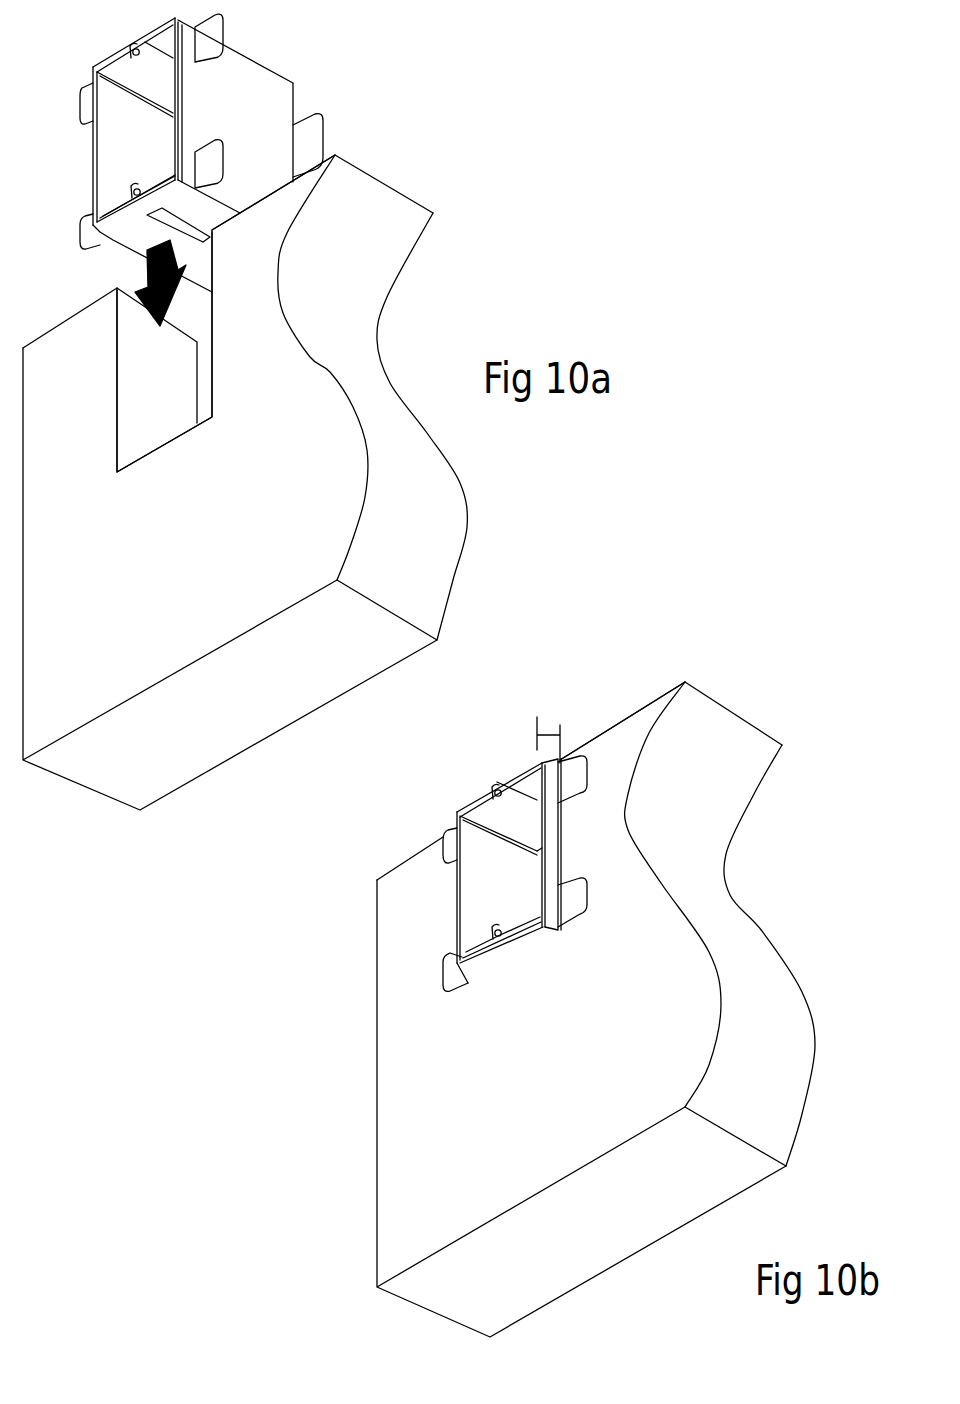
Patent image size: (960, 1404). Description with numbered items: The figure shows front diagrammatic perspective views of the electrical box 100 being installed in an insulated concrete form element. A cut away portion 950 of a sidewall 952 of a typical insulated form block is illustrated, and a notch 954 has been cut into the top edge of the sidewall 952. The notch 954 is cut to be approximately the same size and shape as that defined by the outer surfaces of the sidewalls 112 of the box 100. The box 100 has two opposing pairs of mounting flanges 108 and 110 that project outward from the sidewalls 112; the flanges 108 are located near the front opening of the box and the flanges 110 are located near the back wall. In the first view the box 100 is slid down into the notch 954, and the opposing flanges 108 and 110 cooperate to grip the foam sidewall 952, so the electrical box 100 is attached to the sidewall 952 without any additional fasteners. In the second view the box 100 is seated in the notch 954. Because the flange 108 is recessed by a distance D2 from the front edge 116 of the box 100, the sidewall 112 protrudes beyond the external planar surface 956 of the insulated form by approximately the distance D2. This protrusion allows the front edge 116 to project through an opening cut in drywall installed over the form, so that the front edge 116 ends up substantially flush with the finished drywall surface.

In FIG. 10A, the electrical box 100 is at (238, 164).
In FIG. 10B, the electrical box 100 is at (571, 819).
In FIG. 10A, the mounting flanges 108 is at (213, 30).
In FIG. 10B, the mounting flanges 108 is at (580, 776).
In FIG. 10A, the mounting flanges 110 is at (308, 143).
In FIG. 10A, the sidewalls 112 is at (265, 97).
In FIG. 10B, the sidewalls 112 is at (555, 860).
In FIG. 10B, the front edge 116 is at (540, 826).
In FIG. 10A, the cut away portion 950 is at (442, 171).
In FIG. 10B, the cut away portion 950 is at (794, 804).
In FIG. 10A, the sidewall 952 is at (345, 330).
In FIG. 10A, the notch 954 is at (157, 453).
In FIG. 10B, the external planar surface 956 is at (653, 1016).
In FIG. 10B, the distance D2 is at (548, 737).